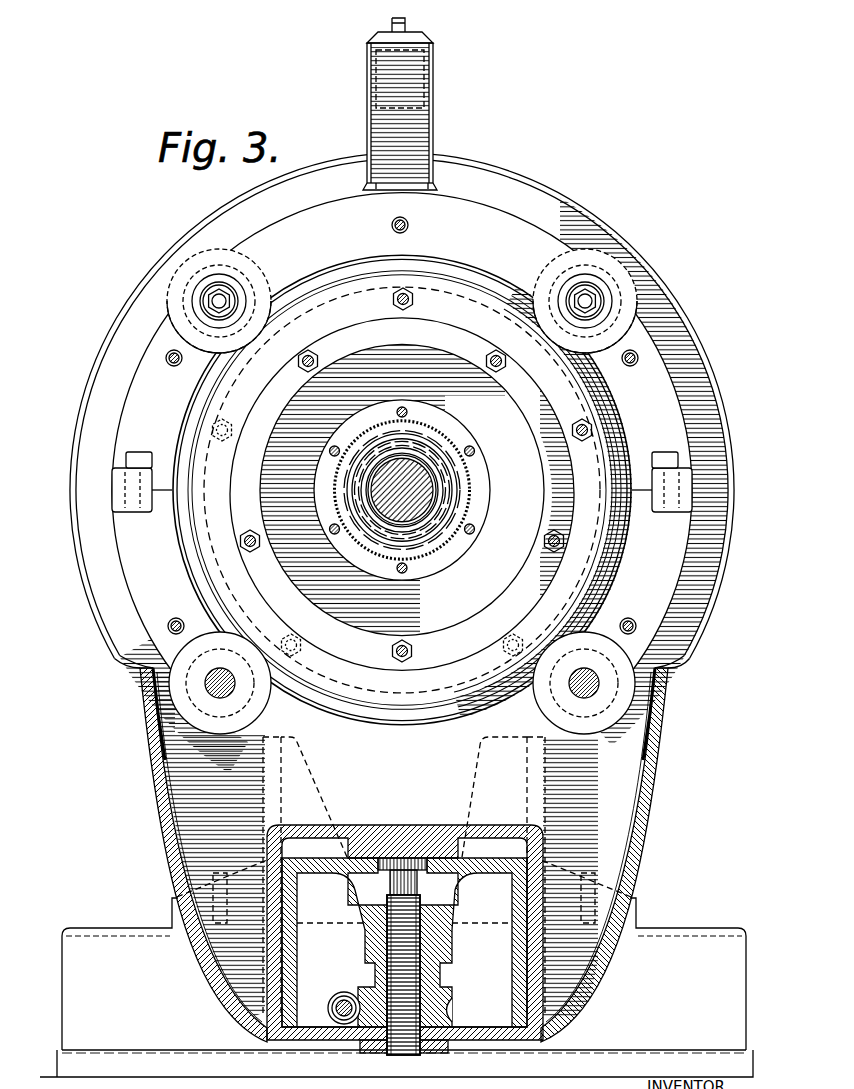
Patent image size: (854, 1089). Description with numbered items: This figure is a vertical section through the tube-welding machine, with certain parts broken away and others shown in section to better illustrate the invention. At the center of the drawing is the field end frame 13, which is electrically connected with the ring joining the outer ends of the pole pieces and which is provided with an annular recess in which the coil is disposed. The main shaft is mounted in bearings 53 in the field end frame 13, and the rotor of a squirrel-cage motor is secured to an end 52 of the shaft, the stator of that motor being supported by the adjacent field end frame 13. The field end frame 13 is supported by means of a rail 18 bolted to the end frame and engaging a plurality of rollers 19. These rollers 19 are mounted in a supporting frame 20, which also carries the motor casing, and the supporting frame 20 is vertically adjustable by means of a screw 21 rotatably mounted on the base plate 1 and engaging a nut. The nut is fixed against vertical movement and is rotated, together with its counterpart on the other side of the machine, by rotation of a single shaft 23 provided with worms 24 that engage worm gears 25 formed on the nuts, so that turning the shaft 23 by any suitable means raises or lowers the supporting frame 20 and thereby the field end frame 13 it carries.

The base plate 1 is at (453, 930).
The field end frame 13 is at (505, 551).
The rail 18 is at (612, 420).
The rollers 19 is at (183, 275).
The supporting frame 20 is at (408, 133).
The screw 21 is at (402, 878).
The shaft 23 is at (343, 998).
The worms 24 is at (334, 1001).
The worm gears 25 is at (452, 1003).
The end of the shaft 52 is at (422, 473).
The bearings 53 is at (455, 492).